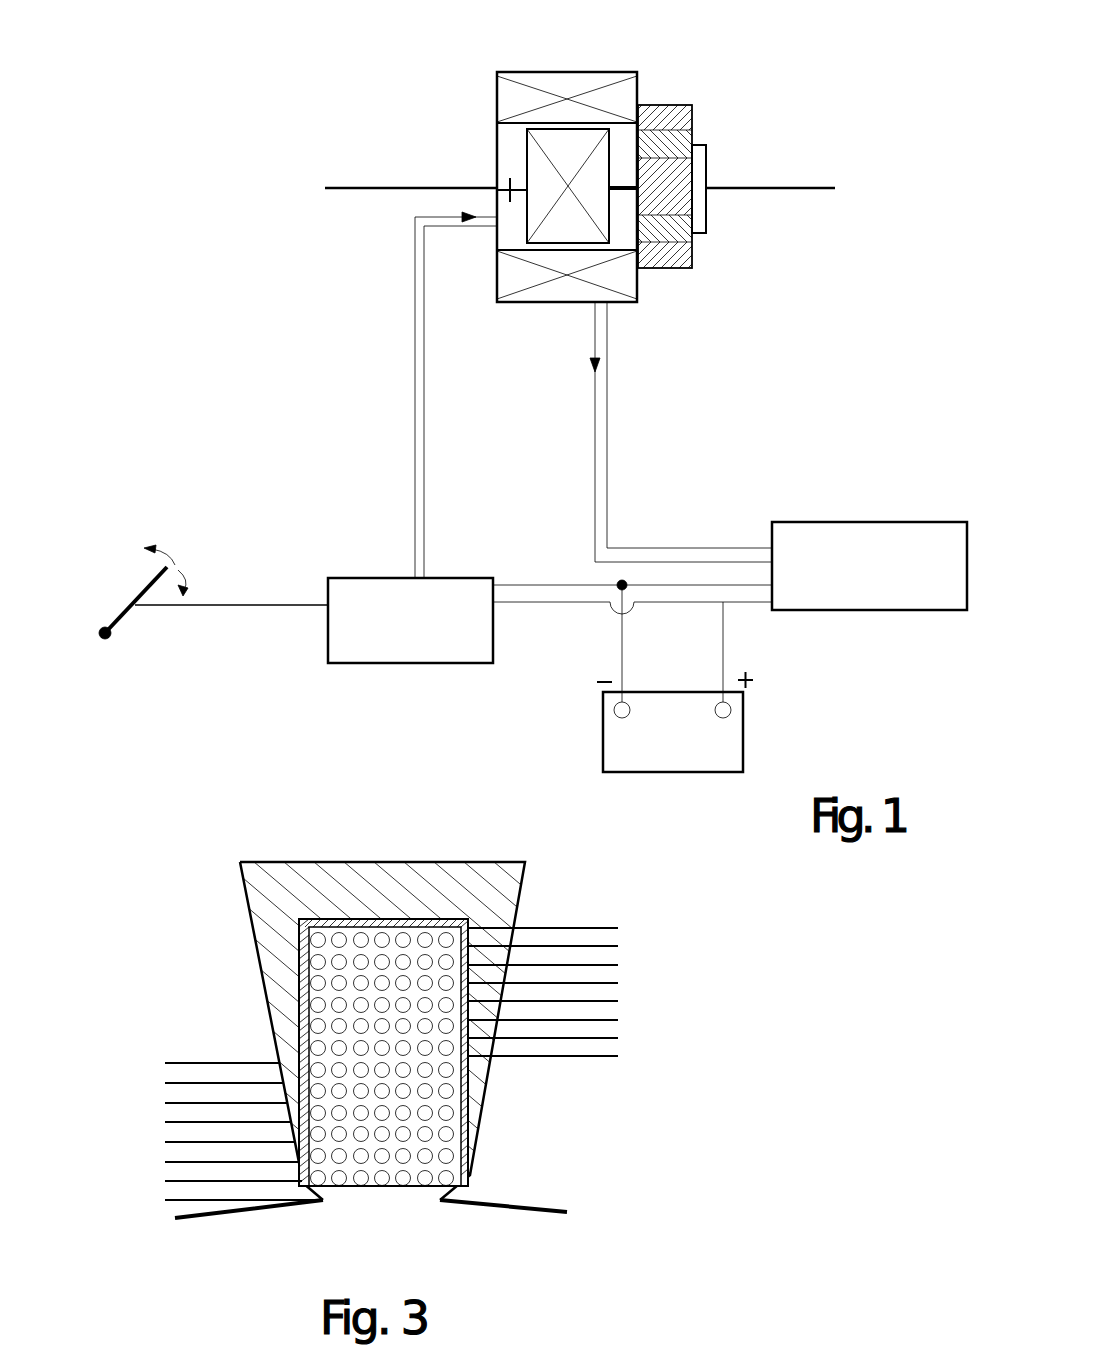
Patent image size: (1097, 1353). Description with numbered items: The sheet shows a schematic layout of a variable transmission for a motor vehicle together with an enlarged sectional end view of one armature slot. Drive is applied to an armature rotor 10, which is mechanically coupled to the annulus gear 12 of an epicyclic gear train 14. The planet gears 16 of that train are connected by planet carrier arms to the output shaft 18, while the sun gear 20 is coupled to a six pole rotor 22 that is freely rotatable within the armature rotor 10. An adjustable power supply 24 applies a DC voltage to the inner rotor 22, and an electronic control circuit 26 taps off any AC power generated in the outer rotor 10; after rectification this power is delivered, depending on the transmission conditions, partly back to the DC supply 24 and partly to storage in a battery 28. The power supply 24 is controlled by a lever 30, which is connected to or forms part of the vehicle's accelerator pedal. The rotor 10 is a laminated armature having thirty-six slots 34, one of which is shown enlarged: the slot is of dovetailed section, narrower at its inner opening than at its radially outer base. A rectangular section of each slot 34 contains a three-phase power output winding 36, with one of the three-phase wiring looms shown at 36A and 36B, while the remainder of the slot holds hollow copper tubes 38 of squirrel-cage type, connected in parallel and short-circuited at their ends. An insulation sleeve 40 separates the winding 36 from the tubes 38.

In FIG. 1, the armature rotor 10 is at (497, 58).
In FIG. 1, the annulus gear 12 is at (666, 104).
In FIG. 1, the epicyclic gear train 14 is at (670, 288).
In FIG. 1, the planet gears 16 is at (695, 137).
In FIG. 1, the output shaft 18 is at (815, 193).
In FIG. 1, the sun gear 20 is at (682, 183).
In FIG. 1, the six pole rotor 22 is at (528, 160).
In FIG. 1, the adjustable power supply 24 is at (423, 636).
In FIG. 1, the electronic control circuit 26 is at (868, 583).
In FIG. 1, the battery 28 is at (681, 758).
In FIG. 1, the lever 30 is at (140, 587).
In FIG. 3, the slots 34 is at (548, 1023).
In FIG. 3, the three-phase power output winding 36 is at (383, 1185).
In FIG. 3, the 3-phase wiring loom 36A is at (248, 1188).
In FIG. 3, the 3-phase wiring loom 36B is at (587, 1050).
In FIG. 3, the hollow copper tubes 38 is at (442, 888).
In FIG. 3, the insulation sleeve 40 is at (313, 1008).